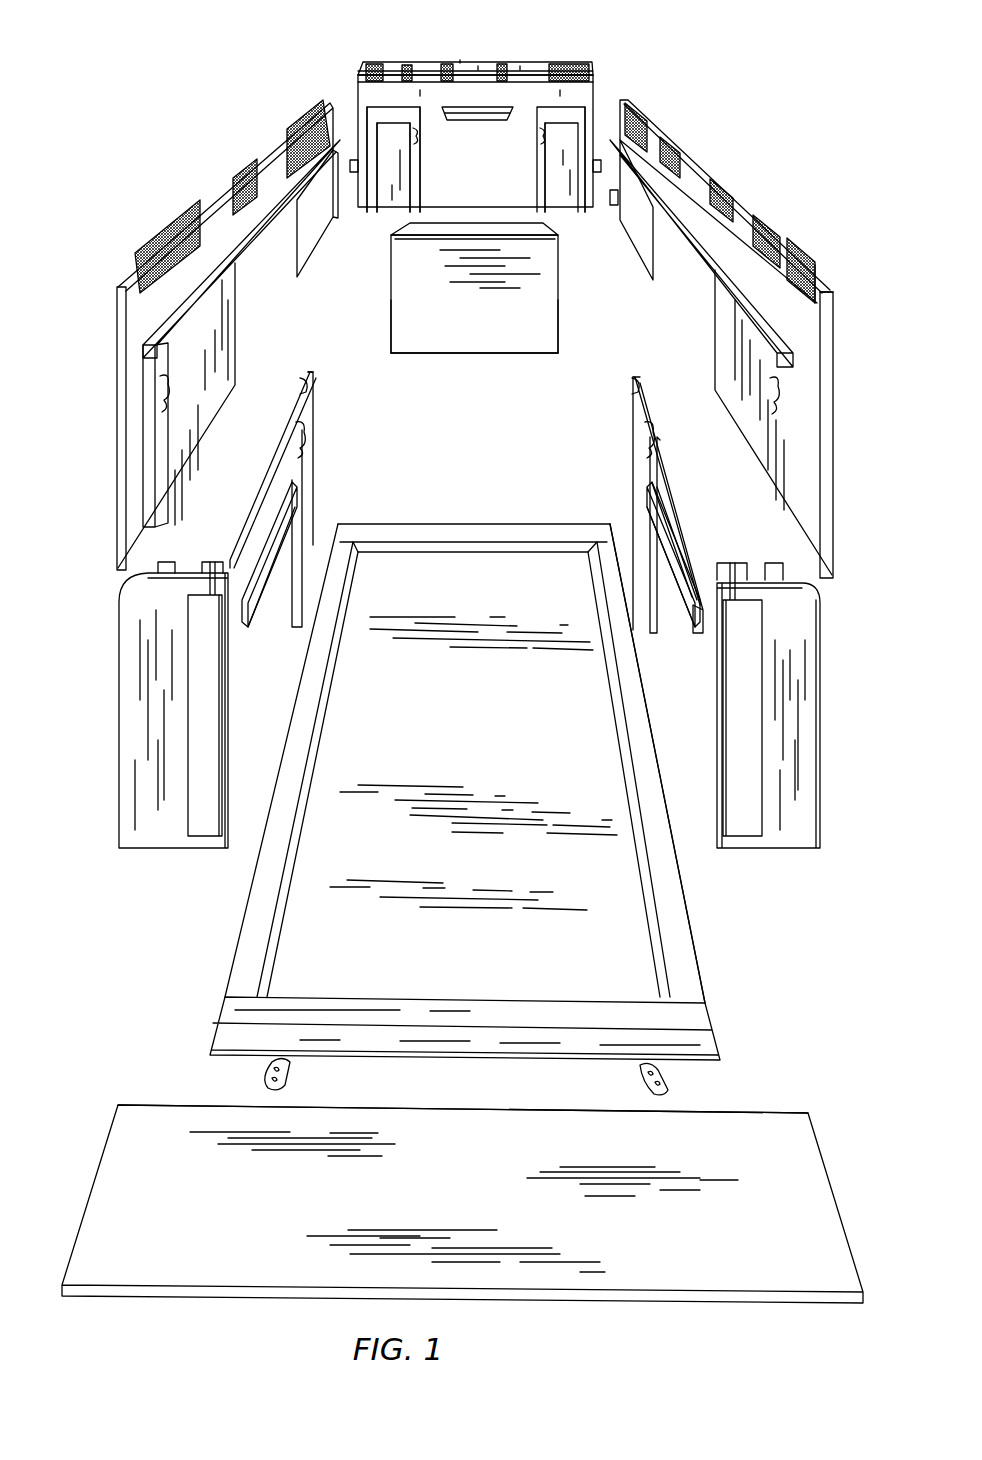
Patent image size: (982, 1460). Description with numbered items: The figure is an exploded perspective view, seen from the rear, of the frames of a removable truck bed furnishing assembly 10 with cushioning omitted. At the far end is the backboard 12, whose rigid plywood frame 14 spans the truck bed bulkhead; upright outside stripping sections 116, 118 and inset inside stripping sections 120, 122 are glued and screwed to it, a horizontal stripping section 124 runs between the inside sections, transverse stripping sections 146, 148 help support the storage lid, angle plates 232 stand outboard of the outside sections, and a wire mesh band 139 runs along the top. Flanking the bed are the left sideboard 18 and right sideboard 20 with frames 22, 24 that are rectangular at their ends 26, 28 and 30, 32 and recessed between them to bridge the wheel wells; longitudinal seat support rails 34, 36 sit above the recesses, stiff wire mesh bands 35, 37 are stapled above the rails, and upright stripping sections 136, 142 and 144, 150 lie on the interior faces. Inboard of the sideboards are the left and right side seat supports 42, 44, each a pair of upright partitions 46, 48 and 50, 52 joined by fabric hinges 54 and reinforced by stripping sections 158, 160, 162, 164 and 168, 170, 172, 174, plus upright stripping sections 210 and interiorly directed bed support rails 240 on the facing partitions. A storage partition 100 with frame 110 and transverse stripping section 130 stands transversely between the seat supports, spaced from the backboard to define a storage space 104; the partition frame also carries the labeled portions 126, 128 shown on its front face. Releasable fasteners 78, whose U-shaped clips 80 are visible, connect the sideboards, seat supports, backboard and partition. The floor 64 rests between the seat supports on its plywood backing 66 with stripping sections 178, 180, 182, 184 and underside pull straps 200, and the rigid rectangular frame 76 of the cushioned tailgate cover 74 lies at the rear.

The removable truck bed furnishing assembly 10 is at (712, 165).
The backboard 12 is at (603, 58).
The rigid frame 14 is at (520, 90).
The left sideboard 18 is at (300, 283).
The right sideboard 20 is at (642, 286).
The frame of left sideboard 22 is at (228, 184).
The frame of right sideboard 24 is at (740, 226).
The end of left sideboard frame 26 is at (230, 350).
The end of left sideboard frame 28 is at (318, 228).
The end of right sideboard frame 30 is at (728, 338).
The end of right sideboard frame 32 is at (650, 236).
The seat support rail 34 is at (262, 232).
The wire mesh band 35 is at (195, 200).
The seat support rail 36 is at (793, 340).
The wire mesh band 37 is at (782, 234).
The left side seat support 42 is at (288, 440).
The right side seat support 44 is at (668, 420).
The upright partition 46 is at (315, 418).
The upright partition 48 is at (168, 835).
The upright partition 50 is at (650, 462).
The upright partition 52 is at (800, 840).
The vertical hinge 54 is at (205, 610).
The floor 64 is at (458, 575).
The plywood backing 66 is at (660, 958).
The cushioned tailgate cover 74 is at (812, 1110).
The rigid rectangular frame 76 is at (795, 1172).
The releasable fastener 78 is at (540, 138).
The U-shaped clip 80 is at (170, 396).
The storage partition 100 is at (468, 356).
The storage space 104 is at (430, 158).
The frame of storage partition 110 is at (518, 340).
The outside stripping section 116 is at (368, 122).
The outside stripping section 118 is at (586, 128).
The inside stripping section 120 is at (412, 175).
The inside stripping section 122 is at (545, 178).
The horizontal stripping section 124 is at (472, 115).
The base block left side 126 is at (400, 328).
The base block right side 128 is at (540, 328).
The transverse stripping section 130 is at (482, 222).
The upright stripping section 136 is at (152, 510).
The wire mesh band 139 is at (485, 66).
The upright stripping section 142 is at (378, 130).
The upright stripping section 144 is at (735, 565).
The transverse stripping section 146 is at (392, 110).
The transverse stripping section 148 is at (563, 110).
The upright stripping section 150 is at (614, 206).
The stripping section 158 is at (300, 382).
The stripping section 160 is at (252, 540).
The stripping section 162 is at (200, 566).
The stripping section 164 is at (172, 568).
The stripping section 168 is at (638, 390).
The stripping section 170 is at (700, 580).
The stripping section 172 is at (712, 585).
The stripping section 174 is at (775, 572).
The stripping section 178 is at (300, 745).
The stripping section 180 is at (545, 540).
The stripping section 182 is at (632, 710).
The stripping section 184 is at (262, 1018).
The pull strap 200 is at (292, 1076).
The stripping section 210 is at (296, 505).
The angle plate 232 is at (352, 172).
The bed support rail 240 is at (262, 600).